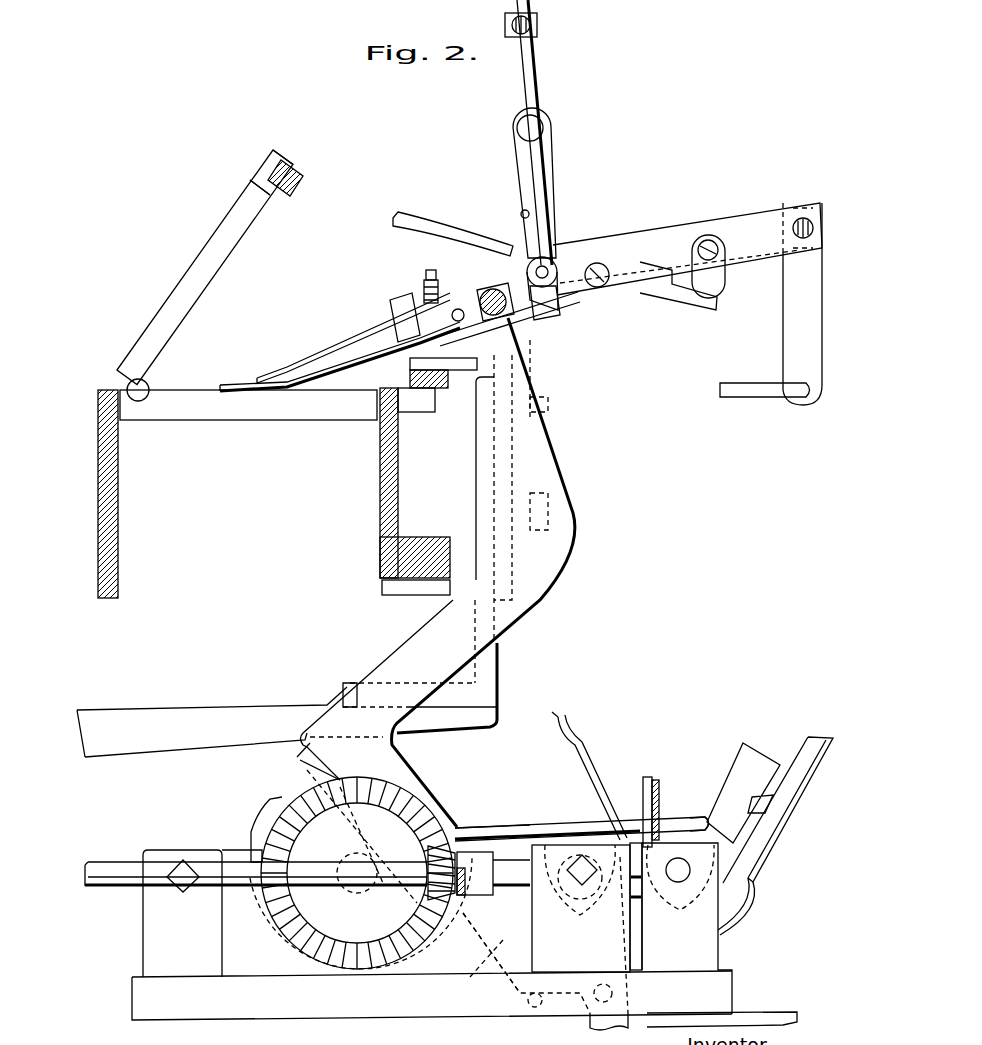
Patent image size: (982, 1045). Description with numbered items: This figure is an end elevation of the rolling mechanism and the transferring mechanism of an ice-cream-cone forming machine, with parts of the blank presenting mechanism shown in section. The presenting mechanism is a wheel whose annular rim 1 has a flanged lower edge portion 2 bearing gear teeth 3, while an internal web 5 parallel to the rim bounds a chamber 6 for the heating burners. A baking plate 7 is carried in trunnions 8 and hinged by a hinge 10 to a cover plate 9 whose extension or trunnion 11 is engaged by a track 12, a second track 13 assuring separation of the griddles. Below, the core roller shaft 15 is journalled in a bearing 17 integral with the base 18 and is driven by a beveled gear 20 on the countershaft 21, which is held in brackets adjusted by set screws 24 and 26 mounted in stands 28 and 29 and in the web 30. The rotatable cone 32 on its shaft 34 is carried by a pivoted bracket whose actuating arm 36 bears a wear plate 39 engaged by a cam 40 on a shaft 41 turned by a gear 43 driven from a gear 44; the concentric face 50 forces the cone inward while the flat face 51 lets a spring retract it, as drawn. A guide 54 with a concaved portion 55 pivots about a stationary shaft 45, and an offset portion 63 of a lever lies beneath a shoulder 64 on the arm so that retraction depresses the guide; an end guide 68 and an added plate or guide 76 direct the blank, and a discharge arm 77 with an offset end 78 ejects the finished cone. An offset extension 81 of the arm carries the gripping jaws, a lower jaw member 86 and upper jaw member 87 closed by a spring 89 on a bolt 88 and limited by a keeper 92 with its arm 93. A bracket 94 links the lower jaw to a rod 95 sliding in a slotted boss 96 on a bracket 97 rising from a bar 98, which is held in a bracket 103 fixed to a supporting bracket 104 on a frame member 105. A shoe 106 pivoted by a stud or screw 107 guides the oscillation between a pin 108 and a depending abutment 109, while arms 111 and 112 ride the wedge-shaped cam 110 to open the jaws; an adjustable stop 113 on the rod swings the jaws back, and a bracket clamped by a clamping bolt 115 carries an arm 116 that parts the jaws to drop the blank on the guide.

The annular rim 1 is at (400, 480).
The flanged lower edge portion 2 is at (436, 538).
The gear teeth 3 is at (393, 597).
The internal web 5 is at (112, 499).
The chamber 6 is at (248, 513).
The plate 7 is at (237, 418).
The trunnions 8 is at (420, 413).
The cover plate 9 is at (188, 278).
The hinge 10 is at (140, 402).
The extension or trunnion 11 is at (265, 166).
The track 12 is at (300, 183).
The track 13 is at (440, 390).
The shaft 15 is at (682, 882).
The bearing 17 is at (700, 946).
The base or frame 18 is at (310, 1012).
The beveled gear 20 is at (655, 779).
The countershaft 21 is at (127, 890).
The set screw 24 is at (190, 887).
The set screw 26 is at (573, 880).
The stand 28 is at (608, 943).
The stand 29 is at (143, 947).
The web 30 is at (230, 852).
The rotatable cone 32 is at (585, 820).
The shaft 34 is at (583, 873).
The actuating arm 36 is at (415, 782).
The wear plate 39 is at (300, 764).
The cam 40 is at (267, 813).
The shaft 41 is at (357, 898).
The gear 43 is at (437, 910).
The gear 44 is at (495, 893).
The stationary shaft 45 is at (614, 992).
The concentric face 50 is at (262, 938).
The flat face 51 is at (340, 858).
The guide 54 is at (770, 838).
The concaved portion 55 is at (756, 915).
The offset portion 63 is at (566, 979).
The shoulder 64 is at (527, 1000).
The end guide 68 is at (756, 762).
The plate or guide 76 is at (585, 768).
The arm 77 is at (523, 833).
The offset end 78 is at (695, 815).
The offset extension 81 is at (538, 582).
The lower jaw member 86 is at (395, 353).
The upper jaw member 87 is at (383, 331).
The bolt 88 is at (436, 275).
The spring 89 is at (425, 293).
The keeper 92 is at (460, 292).
The arm 93 is at (493, 317).
The bracket 94 is at (556, 294).
The rod 95 is at (546, 205).
The slotted boss 96 is at (551, 127).
The bracket 97 is at (548, 170).
The bar 98 is at (678, 243).
The bracket 103 is at (524, 328).
The supporting bracket 104 is at (476, 455).
The frame member 105 is at (294, 706).
The shoe 106 is at (512, 247).
The stud or screw 107 is at (600, 264).
The pin 108 is at (521, 212).
The depending abutment 109 is at (722, 257).
The wedge-shaped cam 110 is at (540, 308).
The arm 111 is at (456, 322).
The arm 112 is at (394, 298).
The adjustable stop 113 is at (537, 30).
The clamping bolt 115 is at (804, 218).
The arm 116 is at (752, 389).